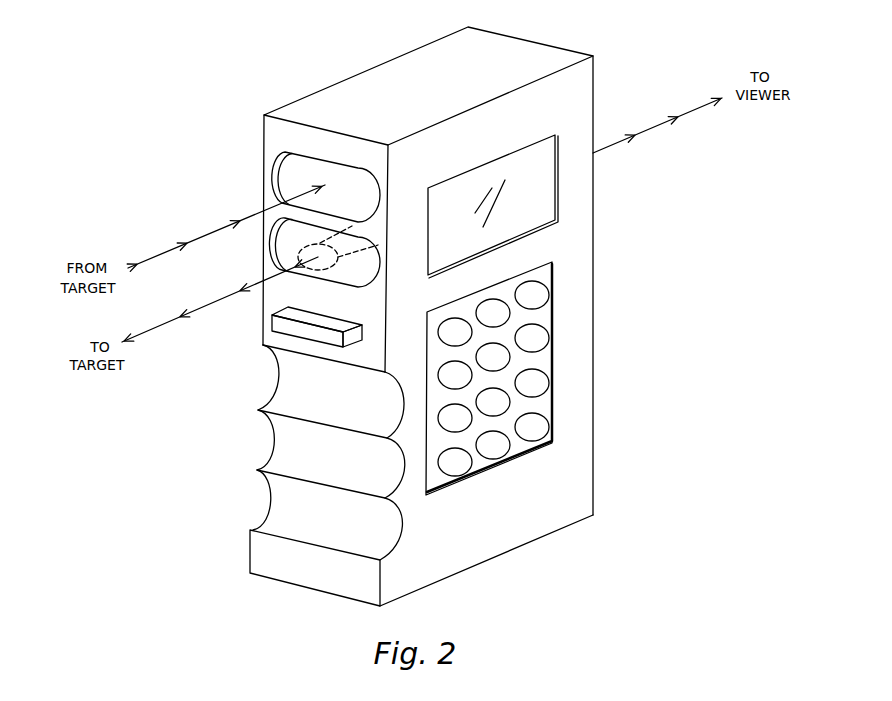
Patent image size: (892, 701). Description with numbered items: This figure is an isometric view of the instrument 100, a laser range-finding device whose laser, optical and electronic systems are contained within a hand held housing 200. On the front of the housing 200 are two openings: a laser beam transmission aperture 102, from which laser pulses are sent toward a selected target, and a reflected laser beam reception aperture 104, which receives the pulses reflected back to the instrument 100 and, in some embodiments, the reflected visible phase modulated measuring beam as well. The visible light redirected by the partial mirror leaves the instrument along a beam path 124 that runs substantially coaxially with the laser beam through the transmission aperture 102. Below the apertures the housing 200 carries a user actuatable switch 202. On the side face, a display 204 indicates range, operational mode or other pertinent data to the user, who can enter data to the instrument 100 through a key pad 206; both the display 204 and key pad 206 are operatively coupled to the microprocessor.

The instrument 100 is at (496, 604).
The laser beam transmission aperture 102 is at (287, 245).
The reflected laser beam reception aperture 104 is at (287, 180).
The beam path 124 is at (327, 272).
The hand held housing 200 is at (250, 553).
The user actuatable switch 202 is at (262, 327).
The display 204 is at (465, 173).
The key pad 206 is at (518, 458).